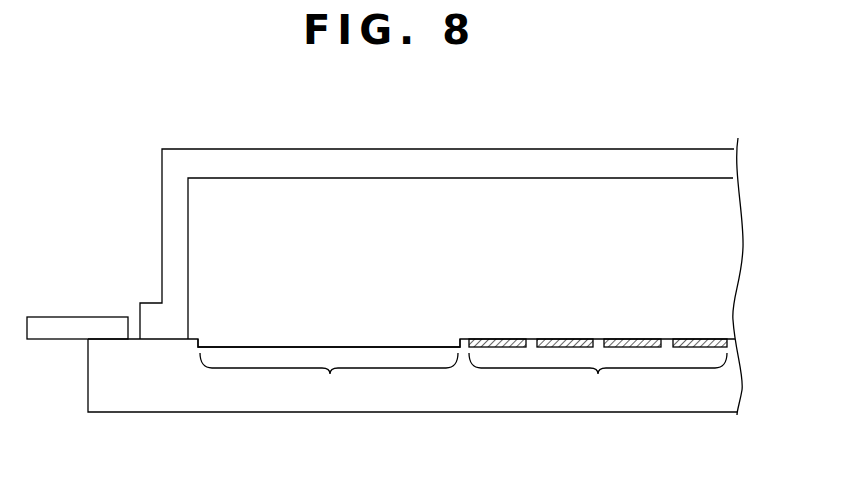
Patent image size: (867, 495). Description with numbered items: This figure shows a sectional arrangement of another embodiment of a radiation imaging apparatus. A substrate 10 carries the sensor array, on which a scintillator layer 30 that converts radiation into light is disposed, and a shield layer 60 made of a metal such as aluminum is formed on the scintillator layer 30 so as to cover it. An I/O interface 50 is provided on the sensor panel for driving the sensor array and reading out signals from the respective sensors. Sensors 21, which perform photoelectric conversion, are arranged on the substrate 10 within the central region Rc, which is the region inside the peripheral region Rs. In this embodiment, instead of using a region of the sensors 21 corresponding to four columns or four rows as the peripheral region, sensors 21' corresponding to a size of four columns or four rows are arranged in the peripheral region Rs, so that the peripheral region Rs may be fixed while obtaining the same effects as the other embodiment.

The substrate 10 is at (157, 414).
The sensors 21 is at (631, 333).
The sensors 21' is at (329, 224).
The scintillator layer 30 is at (537, 219).
The I/O interface 50 is at (58, 316).
The shield layer 60 is at (172, 243).
The peripheral region Rs is at (329, 381).
The central region Rc is at (598, 381).